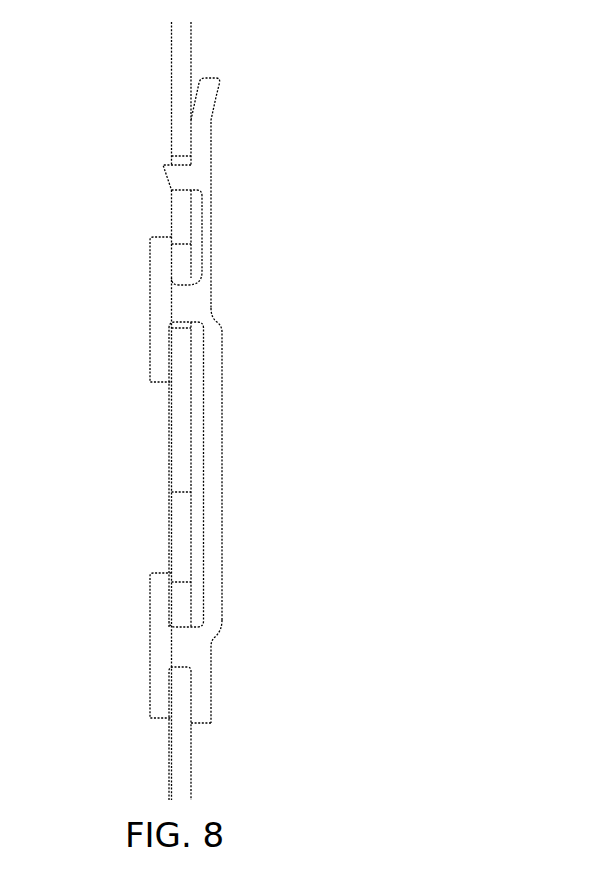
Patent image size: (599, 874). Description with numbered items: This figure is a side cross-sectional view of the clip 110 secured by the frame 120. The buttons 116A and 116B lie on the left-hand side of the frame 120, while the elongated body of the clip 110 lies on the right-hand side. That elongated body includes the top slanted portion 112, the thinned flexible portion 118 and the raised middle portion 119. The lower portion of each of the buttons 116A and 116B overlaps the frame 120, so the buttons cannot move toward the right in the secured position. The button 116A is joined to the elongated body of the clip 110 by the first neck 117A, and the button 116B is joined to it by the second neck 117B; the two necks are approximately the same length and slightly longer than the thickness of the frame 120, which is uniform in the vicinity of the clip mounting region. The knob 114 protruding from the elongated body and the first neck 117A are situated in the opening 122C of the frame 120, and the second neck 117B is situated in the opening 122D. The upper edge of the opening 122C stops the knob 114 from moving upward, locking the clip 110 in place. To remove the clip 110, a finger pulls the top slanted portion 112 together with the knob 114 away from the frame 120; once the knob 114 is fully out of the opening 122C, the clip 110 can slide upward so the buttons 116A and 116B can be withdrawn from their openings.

The clip 110 is at (200, 697).
The top slanted portion 112 is at (216, 90).
The knob 114 is at (183, 177).
The button 116A is at (160, 348).
The button 116B is at (165, 690).
The first neck 117A is at (200, 296).
The second neck 117B is at (188, 641).
The thinned flexible portion 118 is at (205, 239).
The raised middle portion 119 is at (318, 323).
The frame 120 is at (182, 102).
The opening 122C is at (165, 156).
The opening 122D is at (170, 493).